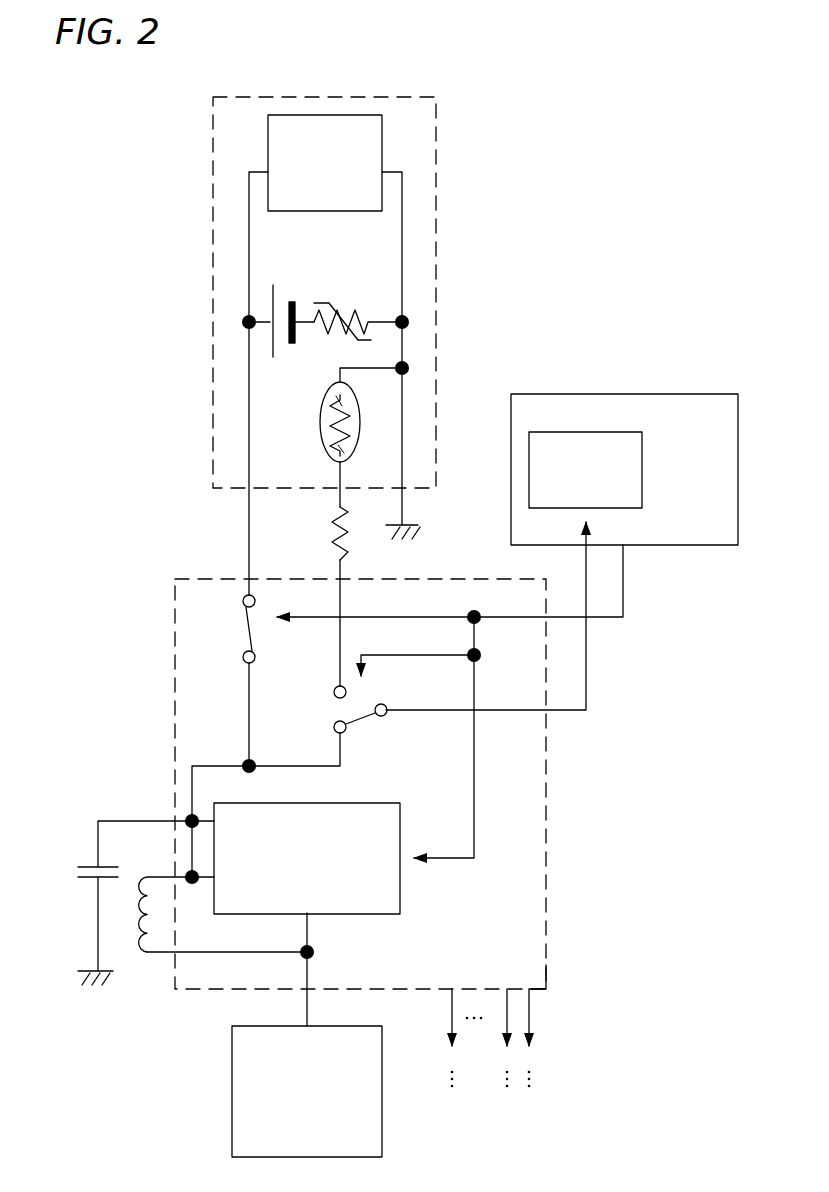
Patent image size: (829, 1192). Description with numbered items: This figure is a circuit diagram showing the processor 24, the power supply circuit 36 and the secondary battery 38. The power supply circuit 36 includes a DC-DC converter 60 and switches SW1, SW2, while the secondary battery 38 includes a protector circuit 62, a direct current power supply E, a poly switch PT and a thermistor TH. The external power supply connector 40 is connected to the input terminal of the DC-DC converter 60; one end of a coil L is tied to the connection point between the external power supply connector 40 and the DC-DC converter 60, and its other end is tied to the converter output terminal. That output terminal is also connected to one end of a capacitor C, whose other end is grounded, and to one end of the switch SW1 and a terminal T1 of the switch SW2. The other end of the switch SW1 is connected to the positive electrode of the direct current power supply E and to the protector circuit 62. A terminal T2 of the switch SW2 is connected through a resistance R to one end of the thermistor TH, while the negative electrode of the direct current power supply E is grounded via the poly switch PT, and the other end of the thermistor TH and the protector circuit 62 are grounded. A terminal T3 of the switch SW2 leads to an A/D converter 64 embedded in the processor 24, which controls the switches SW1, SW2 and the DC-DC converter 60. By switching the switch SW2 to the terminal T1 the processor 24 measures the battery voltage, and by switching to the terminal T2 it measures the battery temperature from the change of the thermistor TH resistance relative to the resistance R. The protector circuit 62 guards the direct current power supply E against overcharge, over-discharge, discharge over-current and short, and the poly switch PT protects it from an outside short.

The processor 24 is at (738, 470).
The power supply circuit 36 is at (175, 620).
The secondary battery 38 is at (436, 280).
The external power supply connector 40 is at (382, 1120).
The DC-DC converter 60 is at (400, 891).
The protector circuit 62 is at (347, 115).
The A/D converter 64 is at (642, 470).
The direct current power supply E is at (282, 300).
The poly switch PT is at (344, 300).
The thermistor TH is at (319, 422).
The resistance R is at (333, 532).
The switch SW1 is at (245, 630).
The switch SW2 is at (358, 717).
The terminal T1 is at (334, 729).
The terminal T2 is at (334, 692).
The terminal T3 is at (385, 705).
The capacitor C is at (78, 870).
The coil L is at (145, 955).